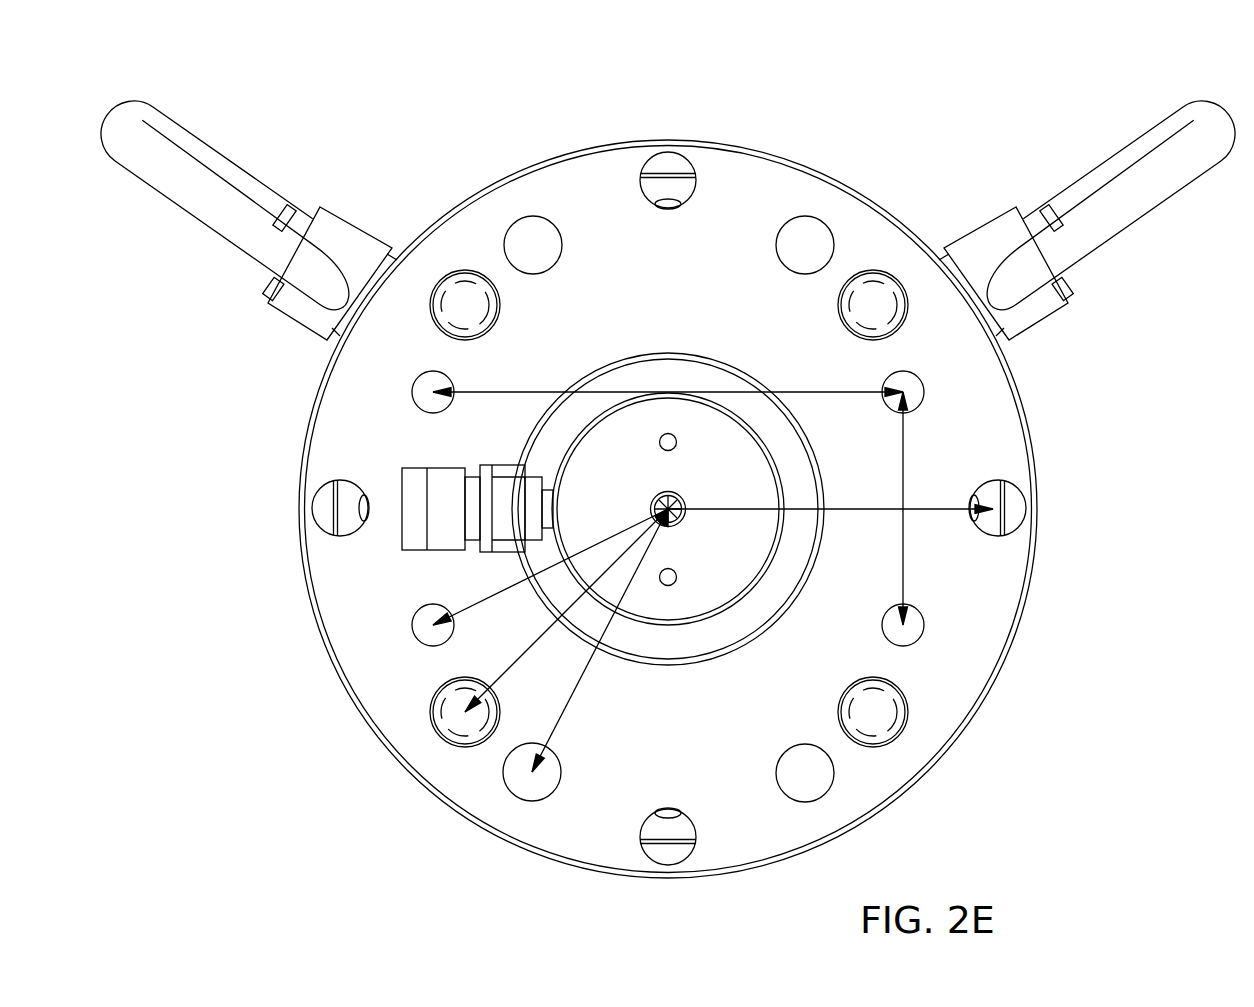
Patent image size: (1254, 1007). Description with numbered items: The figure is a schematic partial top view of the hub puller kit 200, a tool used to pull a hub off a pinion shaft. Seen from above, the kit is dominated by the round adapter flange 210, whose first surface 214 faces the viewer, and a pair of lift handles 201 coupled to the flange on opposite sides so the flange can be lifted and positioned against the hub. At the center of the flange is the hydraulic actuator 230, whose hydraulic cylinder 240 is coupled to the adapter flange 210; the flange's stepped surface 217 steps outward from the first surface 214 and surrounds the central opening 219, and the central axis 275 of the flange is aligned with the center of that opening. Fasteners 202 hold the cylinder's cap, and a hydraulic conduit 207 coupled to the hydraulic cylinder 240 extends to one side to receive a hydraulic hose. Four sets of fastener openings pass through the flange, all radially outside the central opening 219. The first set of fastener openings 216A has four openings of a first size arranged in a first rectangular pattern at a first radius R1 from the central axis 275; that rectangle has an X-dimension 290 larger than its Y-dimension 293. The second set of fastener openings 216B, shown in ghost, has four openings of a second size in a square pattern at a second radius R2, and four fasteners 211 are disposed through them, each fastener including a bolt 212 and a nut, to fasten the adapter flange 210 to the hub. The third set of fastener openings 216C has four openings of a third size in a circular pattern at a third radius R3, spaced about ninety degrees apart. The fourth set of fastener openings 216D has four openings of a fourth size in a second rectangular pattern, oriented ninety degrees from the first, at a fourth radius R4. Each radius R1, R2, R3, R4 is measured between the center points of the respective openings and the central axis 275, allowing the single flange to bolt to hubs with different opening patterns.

The hub puller kit 200 is at (258, 63).
The lift handles 201 is at (232, 232).
The fasteners 202 is at (678, 525).
The hydraulic conduit 207 is at (438, 525).
The adapter flange 210 is at (504, 174).
The fasteners 211 is at (437, 272).
The bolt 212 is at (465, 302).
The first surface 214 is at (313, 440).
The first set of fastener openings 216A is at (420, 403).
The second set of fastener openings 216B is at (447, 328).
The third set of fastener openings 216C is at (688, 187).
The fourth set of fastener openings 216D is at (543, 248).
The stepped surface 217 is at (692, 645).
The central opening 219 is at (782, 553).
The hydraulic actuator 230 is at (772, 447).
The hydraulic cylinder 240 is at (638, 461).
The central axis 275 is at (682, 495).
The X-dimension 290 is at (525, 390).
The Y-dimension 293 is at (905, 560).
The first radius R1 is at (550, 567).
The second radius R2 is at (528, 652).
The third radius R3 is at (830, 490).
The fourth radius R4 is at (600, 640).